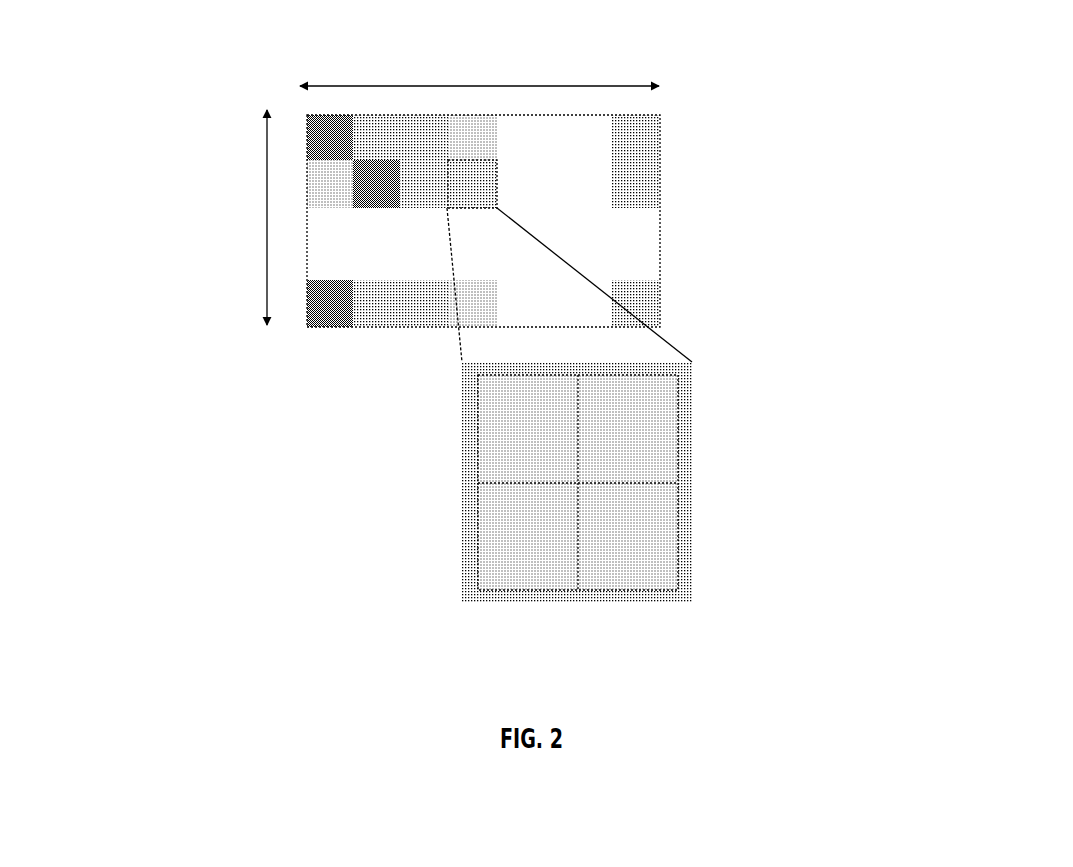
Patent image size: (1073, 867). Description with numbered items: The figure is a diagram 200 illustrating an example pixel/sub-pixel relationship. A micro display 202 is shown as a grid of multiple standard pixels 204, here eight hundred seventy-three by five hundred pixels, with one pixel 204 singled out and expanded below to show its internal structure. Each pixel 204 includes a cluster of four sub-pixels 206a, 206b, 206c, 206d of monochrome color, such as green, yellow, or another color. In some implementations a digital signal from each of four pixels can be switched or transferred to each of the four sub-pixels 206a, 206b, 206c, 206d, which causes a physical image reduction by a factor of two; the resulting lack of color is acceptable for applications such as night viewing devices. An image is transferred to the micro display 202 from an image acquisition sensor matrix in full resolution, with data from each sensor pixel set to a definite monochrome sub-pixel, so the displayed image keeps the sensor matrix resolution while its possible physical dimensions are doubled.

The diagram 200 is at (992, 692).
The micro display 202 is at (307, 115).
The standard pixel 204 is at (468, 180).
The sub-pixel 206a is at (528, 429).
The sub-pixel 206b is at (628, 429).
The sub-pixel 206c is at (528, 536).
The sub-pixel 206d is at (628, 536).